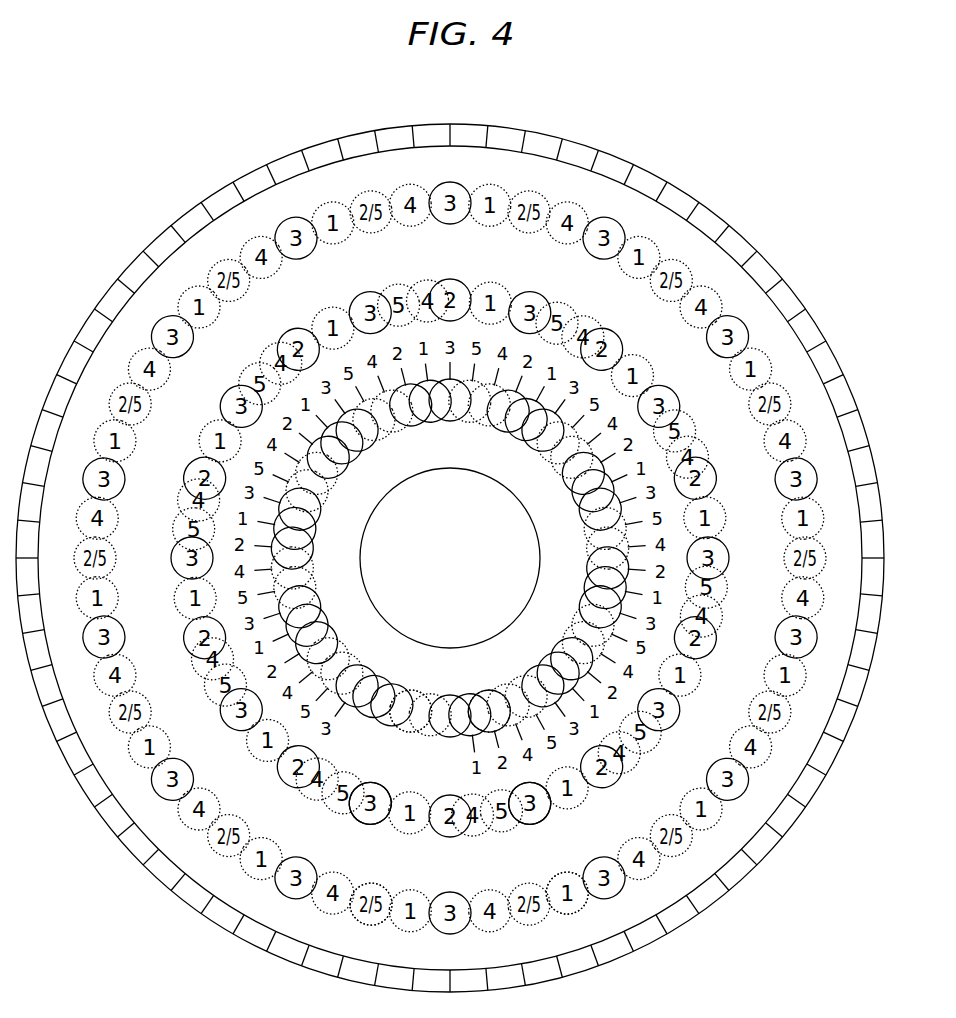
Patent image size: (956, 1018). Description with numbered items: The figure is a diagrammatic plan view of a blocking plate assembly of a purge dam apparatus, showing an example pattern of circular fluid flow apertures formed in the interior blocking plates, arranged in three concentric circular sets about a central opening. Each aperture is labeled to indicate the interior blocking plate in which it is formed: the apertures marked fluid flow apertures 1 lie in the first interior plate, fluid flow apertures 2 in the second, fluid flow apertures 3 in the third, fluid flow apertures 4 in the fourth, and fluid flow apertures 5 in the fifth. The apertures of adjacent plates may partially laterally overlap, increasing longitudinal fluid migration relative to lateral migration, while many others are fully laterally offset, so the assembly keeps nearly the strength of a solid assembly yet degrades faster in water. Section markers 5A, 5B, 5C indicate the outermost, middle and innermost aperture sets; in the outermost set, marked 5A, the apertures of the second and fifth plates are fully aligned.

The fluid flow apertures 1 is at (373, 710).
The fluid flow apertures 2 is at (392, 721).
The fluid flow apertures 3 is at (450, 737).
The fluid flow apertures 4 is at (410, 728).
The fluid flow apertures 5 is at (430, 734).
The cross-sectional illustration of outermost fluid flow aperture set 5A is at (380, 893).
The cross-sectional illustration of middle fluid flow aperture set 5B is at (393, 777).
The cross-sectional illustration of innermost fluid flow aperture set 5C is at (402, 690).